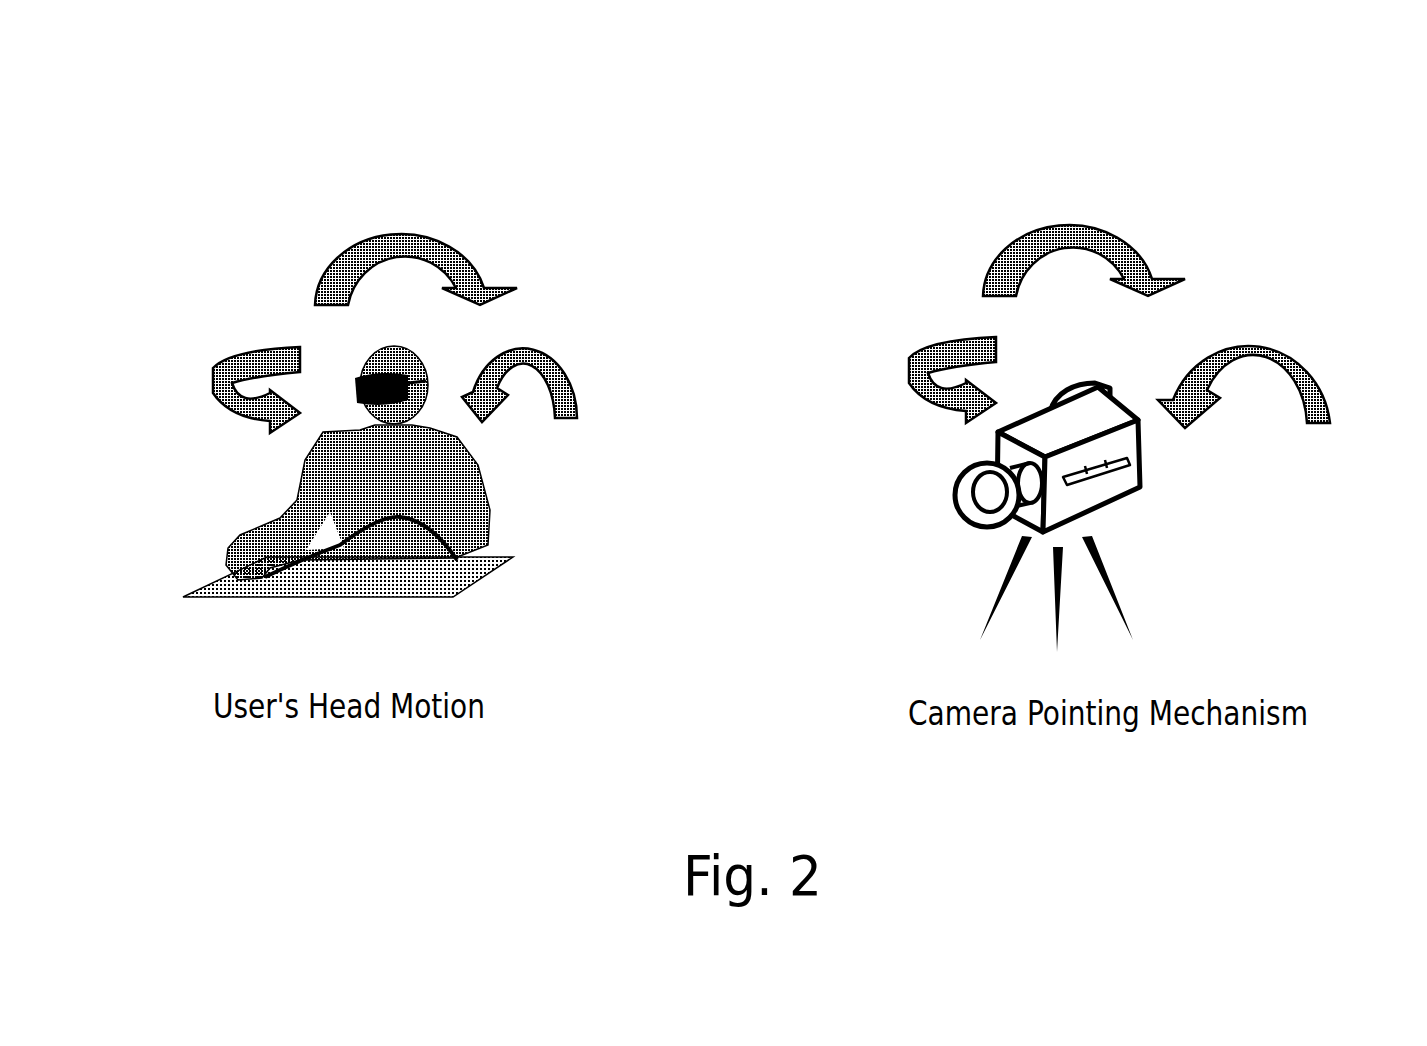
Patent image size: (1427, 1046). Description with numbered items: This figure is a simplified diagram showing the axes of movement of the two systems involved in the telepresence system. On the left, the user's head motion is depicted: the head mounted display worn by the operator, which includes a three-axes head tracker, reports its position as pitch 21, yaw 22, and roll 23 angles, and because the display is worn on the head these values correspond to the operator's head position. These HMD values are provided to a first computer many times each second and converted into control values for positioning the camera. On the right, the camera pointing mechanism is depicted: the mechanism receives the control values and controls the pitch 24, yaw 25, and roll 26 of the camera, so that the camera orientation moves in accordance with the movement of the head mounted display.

The pitch 21 is at (538, 348).
The yaw 22 is at (240, 352).
The roll 23 is at (350, 238).
The pitch 24 is at (1243, 338).
The yaw 25 is at (947, 340).
The roll 26 is at (1025, 227).